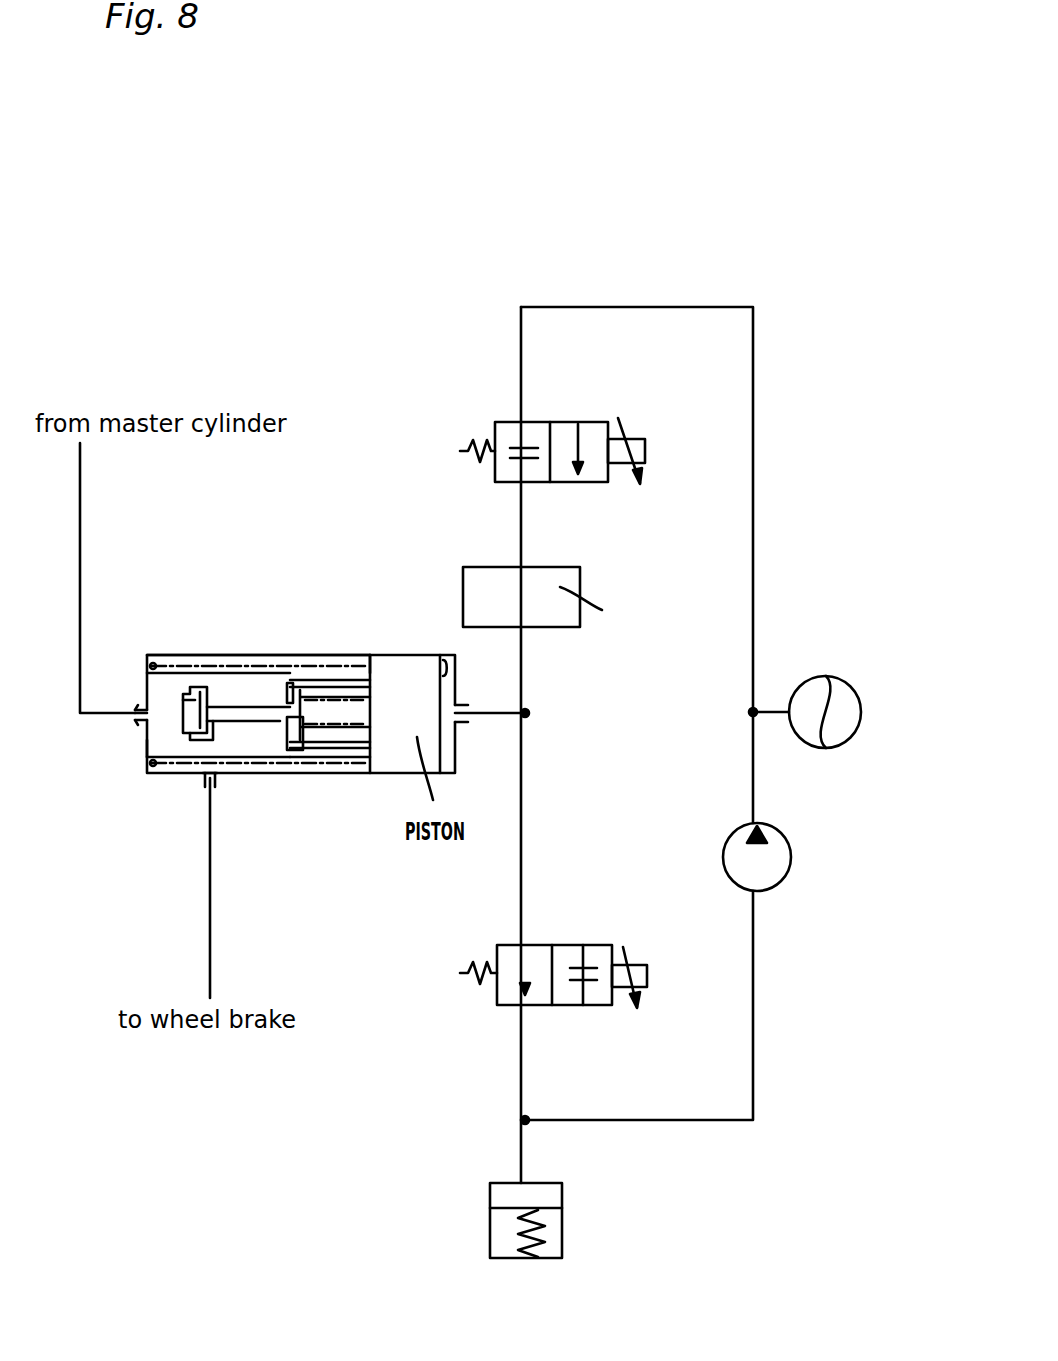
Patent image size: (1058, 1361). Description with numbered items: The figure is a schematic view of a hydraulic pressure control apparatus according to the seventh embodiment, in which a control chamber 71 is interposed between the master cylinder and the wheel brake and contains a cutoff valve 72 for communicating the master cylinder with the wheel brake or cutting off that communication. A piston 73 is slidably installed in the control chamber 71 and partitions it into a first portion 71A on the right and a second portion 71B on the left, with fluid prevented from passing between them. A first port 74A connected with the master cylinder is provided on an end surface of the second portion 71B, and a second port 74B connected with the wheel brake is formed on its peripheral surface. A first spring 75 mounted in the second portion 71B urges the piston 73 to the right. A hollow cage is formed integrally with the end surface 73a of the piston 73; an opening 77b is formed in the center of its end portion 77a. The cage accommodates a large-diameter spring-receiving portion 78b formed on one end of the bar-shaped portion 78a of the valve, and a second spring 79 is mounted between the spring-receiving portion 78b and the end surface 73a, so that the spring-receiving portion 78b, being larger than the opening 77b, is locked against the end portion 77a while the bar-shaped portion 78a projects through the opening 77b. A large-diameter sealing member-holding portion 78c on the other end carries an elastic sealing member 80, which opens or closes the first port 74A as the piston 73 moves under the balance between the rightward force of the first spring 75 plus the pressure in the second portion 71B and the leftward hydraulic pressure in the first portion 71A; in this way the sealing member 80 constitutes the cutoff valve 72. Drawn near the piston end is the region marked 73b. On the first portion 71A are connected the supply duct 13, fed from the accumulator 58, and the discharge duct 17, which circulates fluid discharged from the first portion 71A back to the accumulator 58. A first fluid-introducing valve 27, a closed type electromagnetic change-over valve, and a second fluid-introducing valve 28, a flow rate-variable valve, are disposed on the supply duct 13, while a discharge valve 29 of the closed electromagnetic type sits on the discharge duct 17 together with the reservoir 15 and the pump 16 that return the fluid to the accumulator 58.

The supply duct 13 is at (658, 305).
The reservoir 15 is at (538, 1259).
The pump 16 is at (778, 888).
The discharge duct 17 is at (643, 1122).
The first fluid-introducing valve 27 is at (568, 421).
The second fluid-introducing valve 28 is at (560, 565).
The discharge valve 29 is at (568, 945).
The accumulator 58 is at (845, 745).
The control chamber 71 is at (320, 663).
The first portion 71A is at (450, 672).
The second portion 71B is at (182, 750).
The cutoff valve 72 is at (218, 687).
The piston 73 is at (403, 663).
The end surface 73a is at (360, 653).
The piston bottom 73b is at (245, 750).
The first port 74A is at (135, 722).
The second port 74B is at (212, 780).
The first spring 75 is at (168, 655).
The end portion 77a is at (287, 683).
The opening 77b is at (280, 723).
The bar-shaped portion 78a is at (243, 707).
The spring-receiving portion 78b is at (293, 740).
The sealing member-holding portion 78c is at (197, 683).
The second spring 79 is at (353, 693).
The sealing member 80 is at (183, 705).